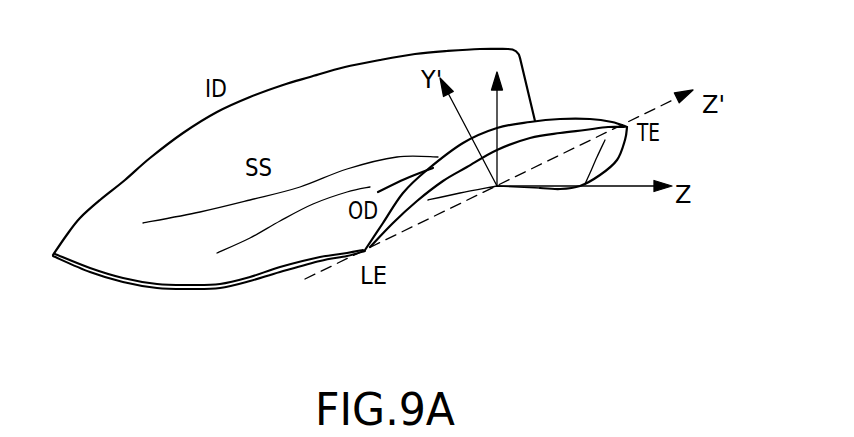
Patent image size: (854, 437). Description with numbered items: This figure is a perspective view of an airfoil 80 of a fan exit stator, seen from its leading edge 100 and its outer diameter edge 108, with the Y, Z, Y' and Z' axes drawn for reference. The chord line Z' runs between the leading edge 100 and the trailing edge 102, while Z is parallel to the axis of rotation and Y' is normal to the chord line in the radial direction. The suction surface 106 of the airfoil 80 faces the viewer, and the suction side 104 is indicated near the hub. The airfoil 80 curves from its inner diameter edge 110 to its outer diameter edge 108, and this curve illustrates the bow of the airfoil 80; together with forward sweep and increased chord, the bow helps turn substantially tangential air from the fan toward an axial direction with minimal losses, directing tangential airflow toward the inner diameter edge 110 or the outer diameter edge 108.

The airfoil 80 is at (294, 128).
The inner diameter edge 110 is at (290, 82).
The suction surface 106 is at (110, 262).
The leading edge 100 is at (290, 273).
The outer diameter edge 108 is at (388, 228).
The trailing edge 102 is at (622, 147).
The suction side 104 is at (560, 188).